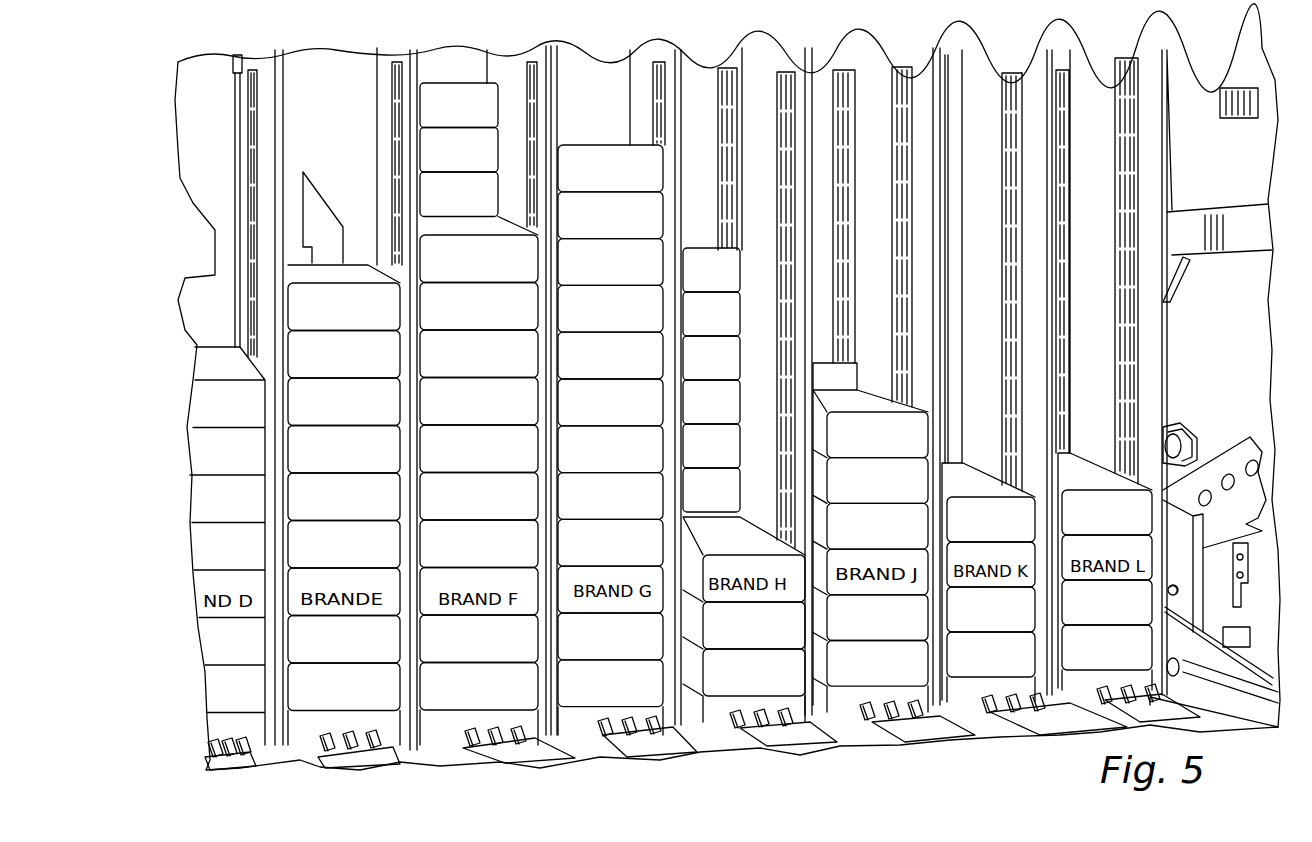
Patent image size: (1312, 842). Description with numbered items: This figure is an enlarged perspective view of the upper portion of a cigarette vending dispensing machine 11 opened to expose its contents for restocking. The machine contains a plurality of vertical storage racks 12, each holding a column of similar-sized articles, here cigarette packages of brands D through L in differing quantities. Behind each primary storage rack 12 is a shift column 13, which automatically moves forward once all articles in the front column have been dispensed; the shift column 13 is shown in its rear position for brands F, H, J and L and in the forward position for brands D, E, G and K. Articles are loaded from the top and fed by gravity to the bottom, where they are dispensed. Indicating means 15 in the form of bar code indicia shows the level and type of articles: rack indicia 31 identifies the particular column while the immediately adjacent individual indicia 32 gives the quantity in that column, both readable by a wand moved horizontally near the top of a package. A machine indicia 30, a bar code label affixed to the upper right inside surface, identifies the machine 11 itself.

The dispensing machine 11 is at (177, 93).
The storage rack 12 is at (827, 62).
The shift column 13 is at (437, 65).
The indicating means 15 is at (1118, 102).
The machine indicia 30 is at (1258, 103).
The rack indicia 31 is at (1003, 92).
The individual indicia 32 is at (1022, 93).